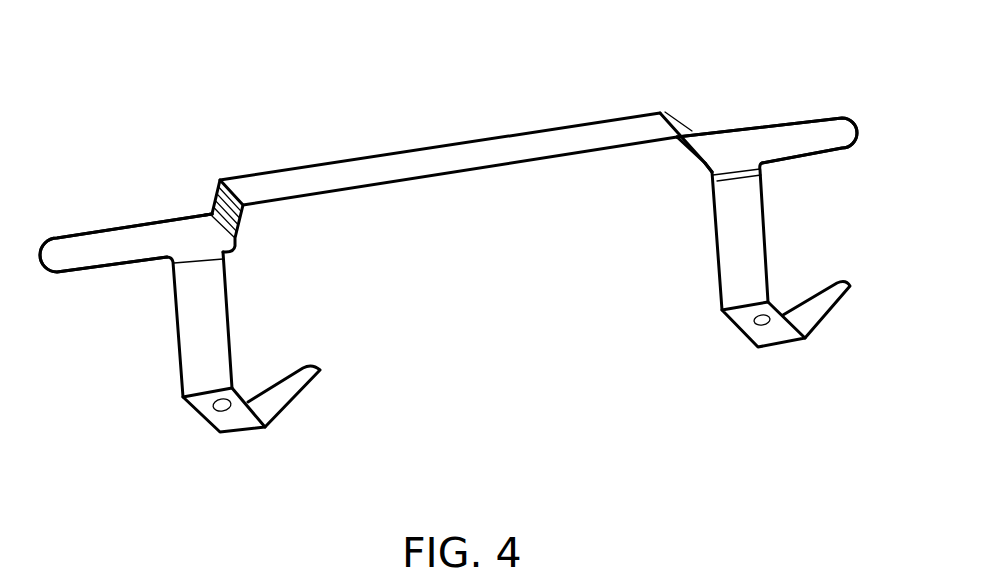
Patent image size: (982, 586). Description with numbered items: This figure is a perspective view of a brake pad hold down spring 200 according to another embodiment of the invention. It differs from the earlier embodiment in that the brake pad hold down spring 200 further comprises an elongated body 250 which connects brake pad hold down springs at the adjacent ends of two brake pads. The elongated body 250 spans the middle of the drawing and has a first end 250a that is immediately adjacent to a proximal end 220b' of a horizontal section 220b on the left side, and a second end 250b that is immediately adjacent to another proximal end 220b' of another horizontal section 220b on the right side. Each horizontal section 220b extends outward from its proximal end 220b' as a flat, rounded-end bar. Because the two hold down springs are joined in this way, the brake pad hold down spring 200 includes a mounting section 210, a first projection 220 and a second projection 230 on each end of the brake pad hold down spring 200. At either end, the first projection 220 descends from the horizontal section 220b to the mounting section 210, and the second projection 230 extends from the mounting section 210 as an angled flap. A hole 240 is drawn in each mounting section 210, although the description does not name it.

The brake pad hold down spring 200 is at (535, 95).
The mounting section 210 is at (205, 415).
The first projection 220 is at (140, 310).
The horizontal section 220b is at (454, 195).
The proximal end 220b' is at (474, 157).
The second projection 230 is at (273, 403).
The hole 240 is at (229, 402).
The elongated body 250 is at (448, 152).
The first end 250a is at (215, 190).
The second end 250b is at (690, 132).